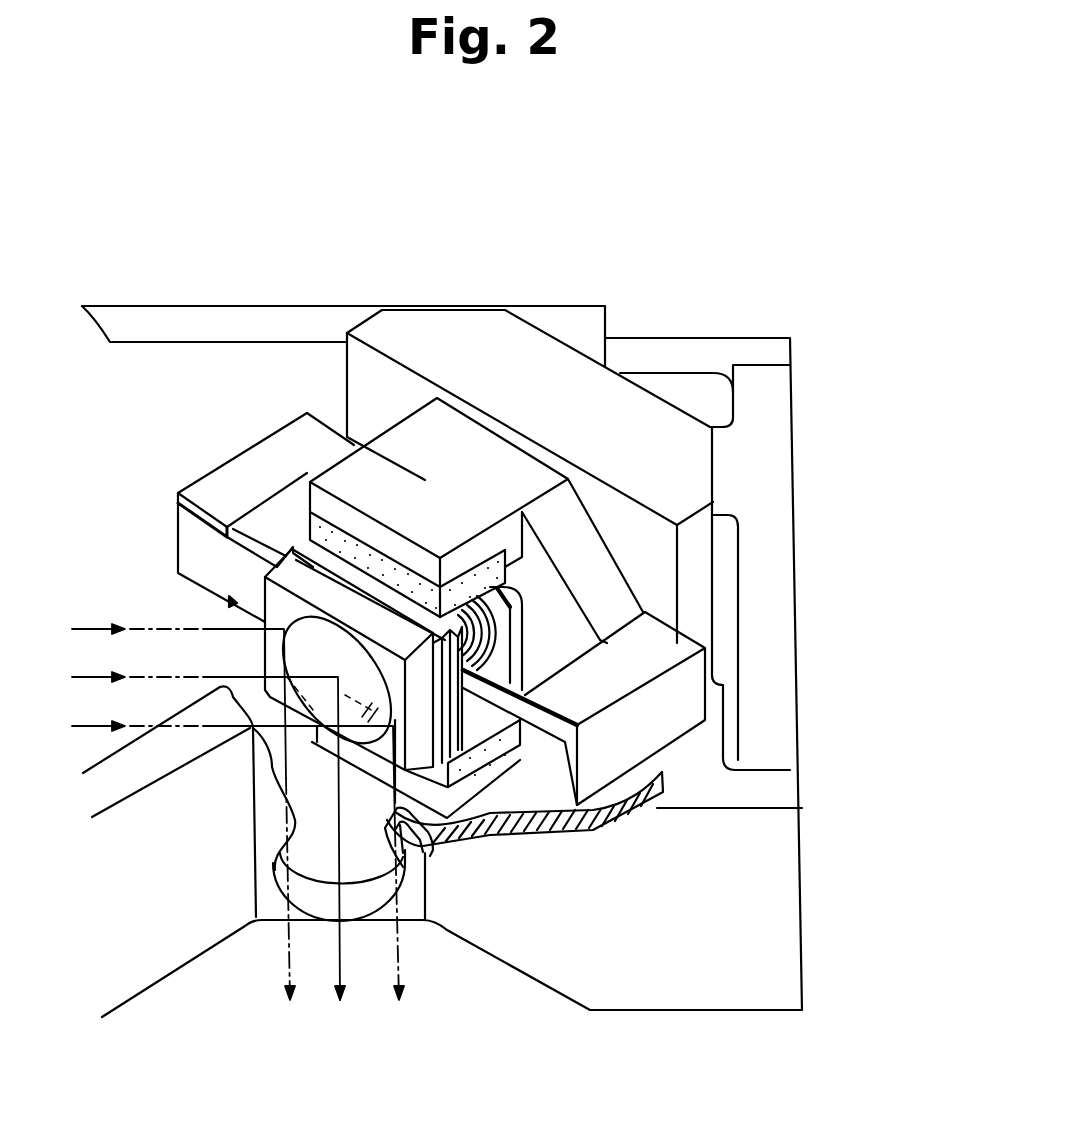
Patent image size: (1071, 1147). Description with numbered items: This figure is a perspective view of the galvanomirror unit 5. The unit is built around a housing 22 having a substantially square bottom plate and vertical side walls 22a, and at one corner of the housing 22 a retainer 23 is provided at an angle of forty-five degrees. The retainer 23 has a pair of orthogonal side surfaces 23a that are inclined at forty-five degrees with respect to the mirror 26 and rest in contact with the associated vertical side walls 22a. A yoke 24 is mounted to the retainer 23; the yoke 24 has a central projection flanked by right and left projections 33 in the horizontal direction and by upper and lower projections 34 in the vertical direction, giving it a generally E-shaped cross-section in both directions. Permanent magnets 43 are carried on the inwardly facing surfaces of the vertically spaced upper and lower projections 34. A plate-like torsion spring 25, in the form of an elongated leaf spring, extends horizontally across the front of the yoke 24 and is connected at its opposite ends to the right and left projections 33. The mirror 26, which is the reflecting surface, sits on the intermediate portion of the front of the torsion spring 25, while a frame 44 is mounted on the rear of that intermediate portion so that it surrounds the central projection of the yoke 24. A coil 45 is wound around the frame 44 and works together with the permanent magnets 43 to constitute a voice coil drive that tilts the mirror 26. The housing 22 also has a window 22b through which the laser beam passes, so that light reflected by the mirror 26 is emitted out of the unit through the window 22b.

The galvanomirror unit 5 is at (829, 283).
The housing 22 is at (797, 507).
The vertical side walls 22a is at (775, 663).
The window 22b is at (310, 900).
The retainer 23 is at (612, 407).
The side surfaces 23a is at (418, 305).
The yoke 24 is at (315, 410).
The torsion spring 25 is at (598, 773).
The mirror 26 is at (420, 757).
The right and left projections 33 is at (221, 481).
The upper and lower projections 34 is at (423, 455).
The permanent magnets 43 is at (473, 580).
The frame 44 is at (263, 577).
The coil 45 is at (500, 660).